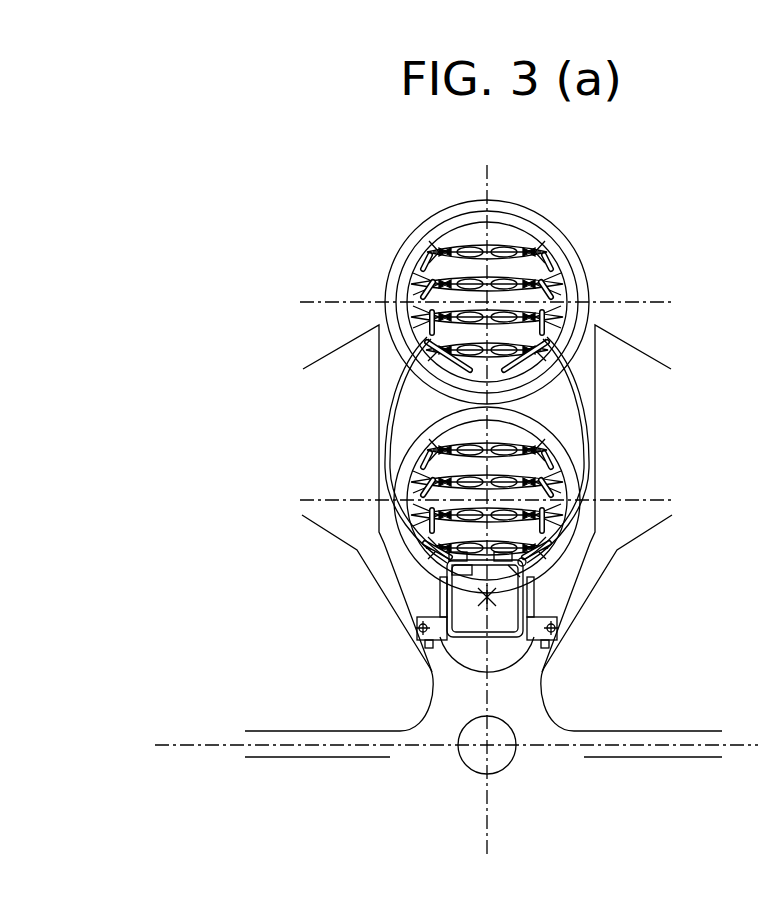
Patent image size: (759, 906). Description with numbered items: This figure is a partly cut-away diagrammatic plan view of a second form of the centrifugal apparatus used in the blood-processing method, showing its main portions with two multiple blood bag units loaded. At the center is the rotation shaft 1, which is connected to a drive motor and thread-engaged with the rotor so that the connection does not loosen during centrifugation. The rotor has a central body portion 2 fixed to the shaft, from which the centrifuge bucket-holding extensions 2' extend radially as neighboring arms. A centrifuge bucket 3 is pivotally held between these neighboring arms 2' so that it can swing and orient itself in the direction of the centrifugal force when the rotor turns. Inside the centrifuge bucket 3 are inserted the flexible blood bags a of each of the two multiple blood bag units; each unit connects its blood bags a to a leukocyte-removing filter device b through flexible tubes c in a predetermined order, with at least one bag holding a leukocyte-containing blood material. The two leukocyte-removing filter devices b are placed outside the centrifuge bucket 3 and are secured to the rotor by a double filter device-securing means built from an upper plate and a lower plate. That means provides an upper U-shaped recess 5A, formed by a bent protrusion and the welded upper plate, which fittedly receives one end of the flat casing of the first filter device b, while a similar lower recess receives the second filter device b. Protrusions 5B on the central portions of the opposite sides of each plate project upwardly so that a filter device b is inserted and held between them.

The rotation shaft 1 is at (498, 760).
The central body portion 2 is at (483, 636).
The centrifuge bucket-holding extension 2' is at (511, 495).
The centrifuge bucket 3 is at (511, 288).
The upper U-shaped recess 5A is at (445, 566).
The protrusion 5B is at (443, 598).
The flexible blood bag a is at (470, 248).
The leukocyte-removing filter device b is at (470, 622).
The flexible tube c is at (549, 253).